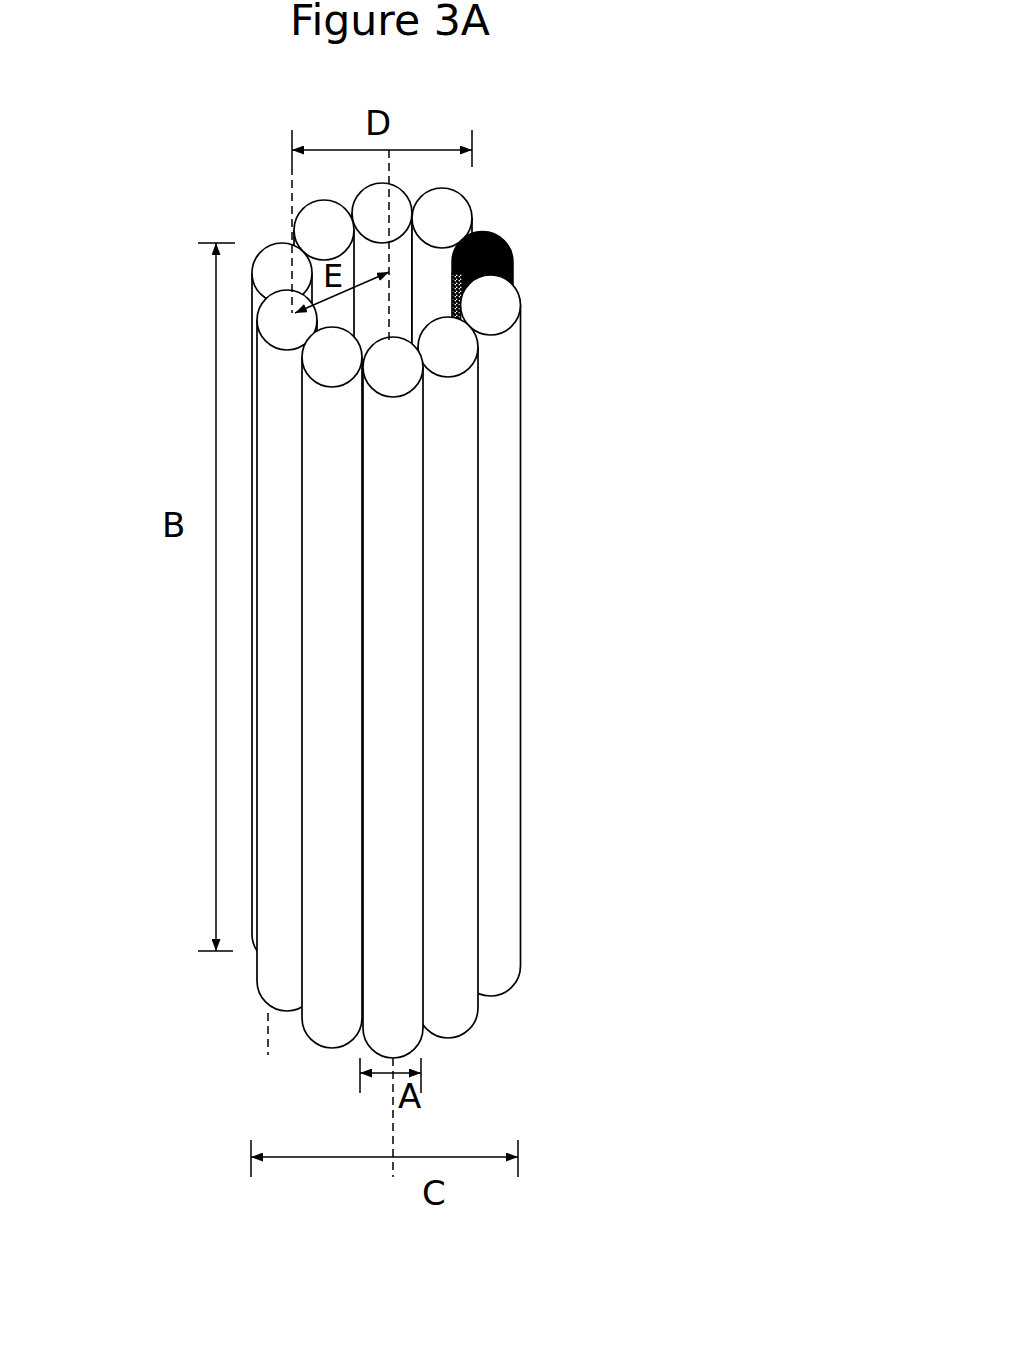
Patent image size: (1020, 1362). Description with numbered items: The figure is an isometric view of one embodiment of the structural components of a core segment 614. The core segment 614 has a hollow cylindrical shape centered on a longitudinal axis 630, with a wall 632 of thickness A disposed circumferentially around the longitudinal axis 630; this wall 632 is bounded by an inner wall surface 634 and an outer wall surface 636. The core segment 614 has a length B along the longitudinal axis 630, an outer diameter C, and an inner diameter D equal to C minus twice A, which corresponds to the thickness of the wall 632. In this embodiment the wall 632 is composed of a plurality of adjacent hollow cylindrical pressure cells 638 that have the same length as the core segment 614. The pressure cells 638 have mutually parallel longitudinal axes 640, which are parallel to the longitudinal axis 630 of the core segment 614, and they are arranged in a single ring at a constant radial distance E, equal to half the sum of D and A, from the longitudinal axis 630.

The core segment 614 is at (143, 982).
The longitudinal axis 630 is at (397, 180).
The wall 632 is at (525, 728).
The inner wall surface 634 is at (433, 283).
The outer wall surface 636 is at (521, 302).
The hollow cylindrical pressure cells 638 is at (432, 217).
The longitudinal axes of pressure cells 640 is at (278, 198).